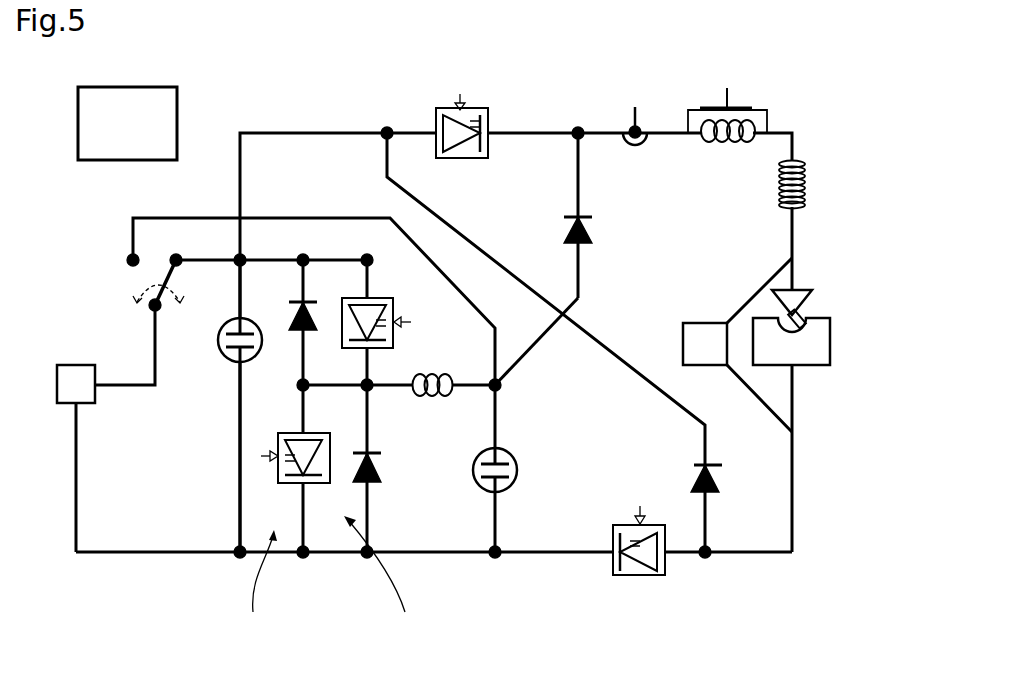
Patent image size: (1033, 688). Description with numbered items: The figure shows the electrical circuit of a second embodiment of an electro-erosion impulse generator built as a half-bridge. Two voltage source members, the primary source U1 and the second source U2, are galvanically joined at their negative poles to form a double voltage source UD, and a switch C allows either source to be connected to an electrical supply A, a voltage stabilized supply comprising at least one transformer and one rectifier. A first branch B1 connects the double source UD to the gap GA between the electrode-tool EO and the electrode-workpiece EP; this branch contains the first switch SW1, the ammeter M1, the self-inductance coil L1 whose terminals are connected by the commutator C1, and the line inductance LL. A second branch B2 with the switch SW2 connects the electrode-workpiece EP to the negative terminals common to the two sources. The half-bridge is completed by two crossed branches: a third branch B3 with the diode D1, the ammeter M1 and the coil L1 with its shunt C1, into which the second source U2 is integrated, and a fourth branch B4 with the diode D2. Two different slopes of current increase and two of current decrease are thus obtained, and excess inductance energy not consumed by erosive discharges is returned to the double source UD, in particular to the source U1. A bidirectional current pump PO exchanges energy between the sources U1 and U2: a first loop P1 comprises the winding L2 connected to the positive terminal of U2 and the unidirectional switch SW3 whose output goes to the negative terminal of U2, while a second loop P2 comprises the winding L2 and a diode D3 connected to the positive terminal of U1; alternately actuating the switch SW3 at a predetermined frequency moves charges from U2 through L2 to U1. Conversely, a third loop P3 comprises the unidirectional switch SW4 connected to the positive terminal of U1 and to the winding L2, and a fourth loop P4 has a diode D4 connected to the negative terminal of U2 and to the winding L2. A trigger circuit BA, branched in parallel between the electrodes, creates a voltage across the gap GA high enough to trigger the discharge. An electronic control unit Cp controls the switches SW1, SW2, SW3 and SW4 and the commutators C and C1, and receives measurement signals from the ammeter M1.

The electronic control unit Cp is at (127, 123).
The first branch B1 is at (273, 132).
The first switch SW1 is at (513, 85).
The ammeter M1 is at (640, 126).
The commutator C1 is at (733, 110).
The self-inductance coil L1 is at (731, 148).
The line inductance LL is at (805, 186).
The diode D1 is at (597, 231).
The third branch B3 is at (583, 290).
The fourth branch B4 is at (663, 392).
The electrode-tool EO is at (796, 297).
The gap GA is at (805, 316).
The electrode-workpiece EP is at (812, 356).
The trigger circuit BA is at (737, 345).
The diode D2 is at (720, 480).
The second branch B2 is at (553, 555).
The switch SW2 is at (633, 578).
The second voltage source member U2 is at (518, 465).
The fourth loop P4 is at (368, 412).
The winding L2 is at (423, 375).
The diode D4 is at (383, 465).
The unidirectional switch SW4 is at (413, 293).
The third loop P3 is at (352, 258).
The second loop P2 is at (303, 291).
The diode D3 is at (297, 330).
The first voltage source member U1 is at (220, 352).
The switch C is at (182, 279).
The electrical supply A is at (106, 428).
The unidirectional switch SW3 is at (278, 473).
The first loop P1 is at (307, 522).
The double voltage source UD is at (258, 586).
The current pump PO is at (383, 579).